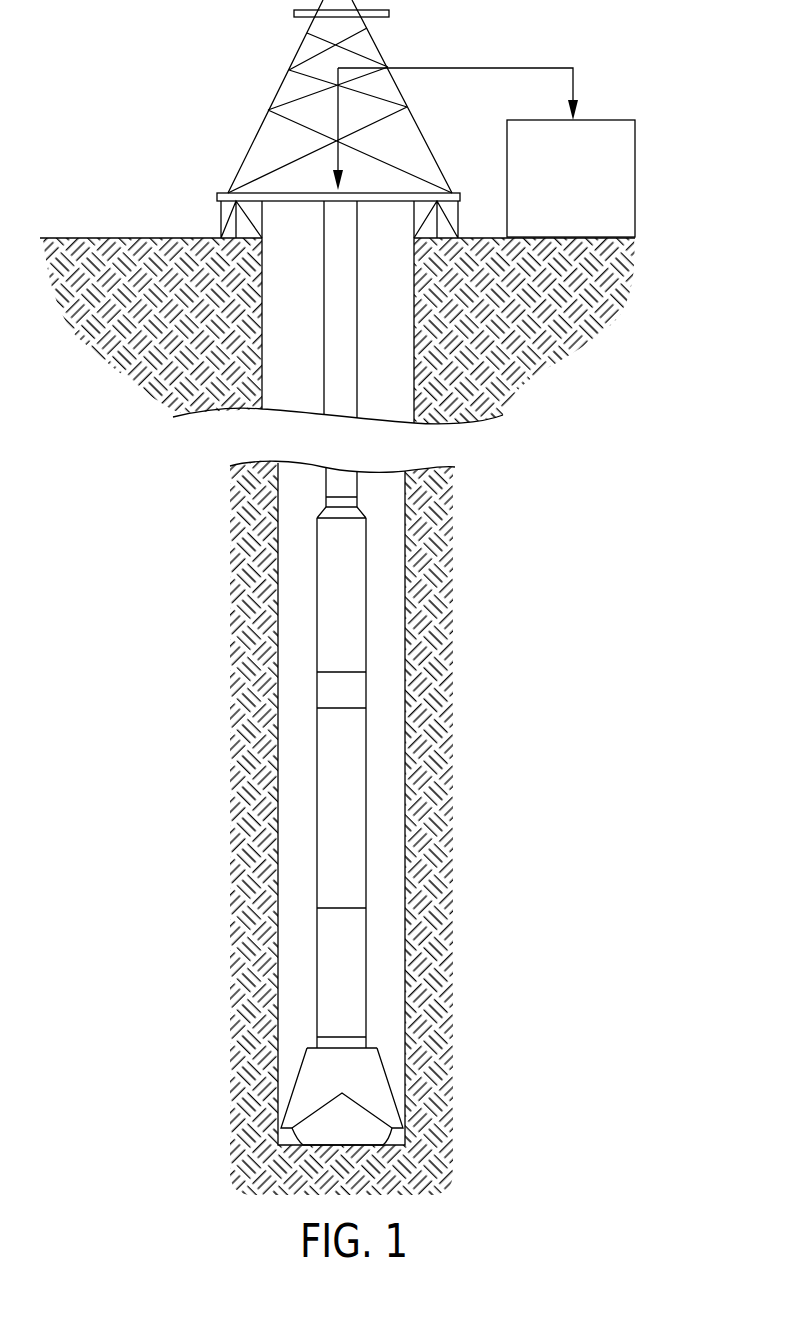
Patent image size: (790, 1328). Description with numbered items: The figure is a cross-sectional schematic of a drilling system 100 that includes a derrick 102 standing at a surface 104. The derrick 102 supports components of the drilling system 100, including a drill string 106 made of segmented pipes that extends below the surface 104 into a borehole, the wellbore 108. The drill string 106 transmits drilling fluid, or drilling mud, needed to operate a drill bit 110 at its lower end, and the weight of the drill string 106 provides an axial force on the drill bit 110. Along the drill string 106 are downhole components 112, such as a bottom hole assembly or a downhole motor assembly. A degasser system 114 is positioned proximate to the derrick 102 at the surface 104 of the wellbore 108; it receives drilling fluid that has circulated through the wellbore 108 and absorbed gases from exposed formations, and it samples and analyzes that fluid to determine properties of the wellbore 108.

The drilling system 100 is at (158, 584).
The derrick 102 is at (380, 51).
The surface 104 is at (135, 252).
The drill string 106 is at (357, 320).
The wellbore 108 is at (277, 333).
The drill bit 110 is at (395, 1087).
The downhole components 112 is at (355, 975).
The degasser system 114 is at (626, 154).